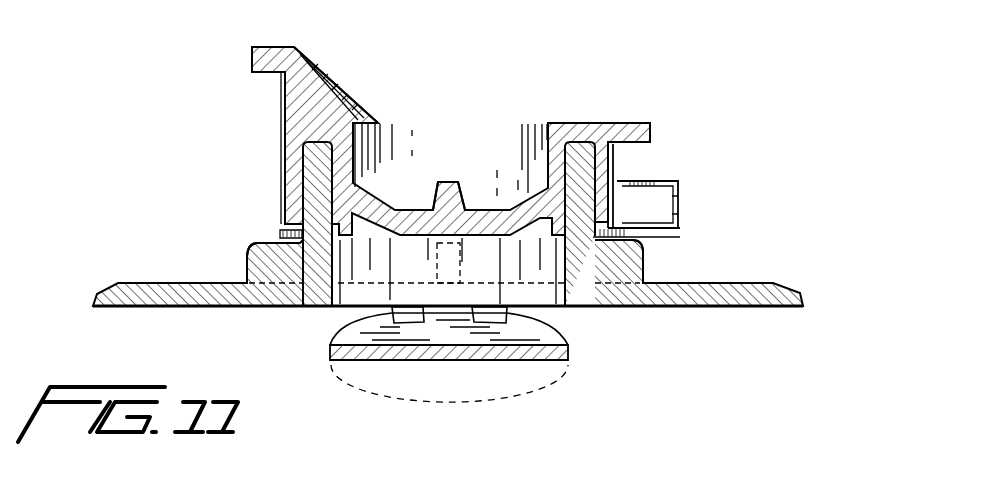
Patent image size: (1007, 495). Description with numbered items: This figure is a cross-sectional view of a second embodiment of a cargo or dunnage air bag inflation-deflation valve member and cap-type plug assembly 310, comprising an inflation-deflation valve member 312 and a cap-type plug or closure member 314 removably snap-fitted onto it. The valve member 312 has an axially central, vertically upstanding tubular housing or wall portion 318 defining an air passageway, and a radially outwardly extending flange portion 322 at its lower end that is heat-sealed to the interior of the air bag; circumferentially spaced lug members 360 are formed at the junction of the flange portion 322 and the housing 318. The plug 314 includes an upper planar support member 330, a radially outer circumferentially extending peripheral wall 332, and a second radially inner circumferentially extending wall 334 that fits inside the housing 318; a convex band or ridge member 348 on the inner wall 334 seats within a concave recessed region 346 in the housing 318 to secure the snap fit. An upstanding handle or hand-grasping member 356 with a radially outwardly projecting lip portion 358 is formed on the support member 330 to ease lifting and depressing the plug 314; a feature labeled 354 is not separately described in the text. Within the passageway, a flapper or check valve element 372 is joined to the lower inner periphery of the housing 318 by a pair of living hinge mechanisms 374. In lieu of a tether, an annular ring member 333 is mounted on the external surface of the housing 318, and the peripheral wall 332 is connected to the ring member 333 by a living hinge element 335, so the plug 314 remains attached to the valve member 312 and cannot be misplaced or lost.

The cargo or dunnage air bag inflation-deflation valve member and cap-type plug asse 310 is at (745, 92).
The inflation-deflation valve member 312 is at (718, 255).
The cap-type plug or closure member 314 is at (555, 90).
The vertically upstanding tubular housing or wall portion 318 is at (315, 195).
The radially outwardly extending flange portion 322 is at (713, 302).
The upper planar support member 330 is at (630, 124).
The radially outer, circumferentially extending peripheral wall 332 is at (604, 162).
The annular ring member 333 is at (282, 235).
The second radially inner, circumferentially extending wall 334 is at (352, 168).
The living hinge element 335 is at (678, 187).
The circumferentially extending concave recessed region 346 is at (574, 160).
The circumferentially extending convex band or ridge member 348 is at (558, 195).
The floor of container 354 is at (446, 195).
The handle or hand-grasping member 356 is at (332, 70).
The radially outwardly projecting lip portion 358 is at (258, 60).
The lug members 360 is at (262, 263).
The flapper valve or check valve element 372 is at (533, 352).
The living hinge mechanisms 374 is at (340, 323).